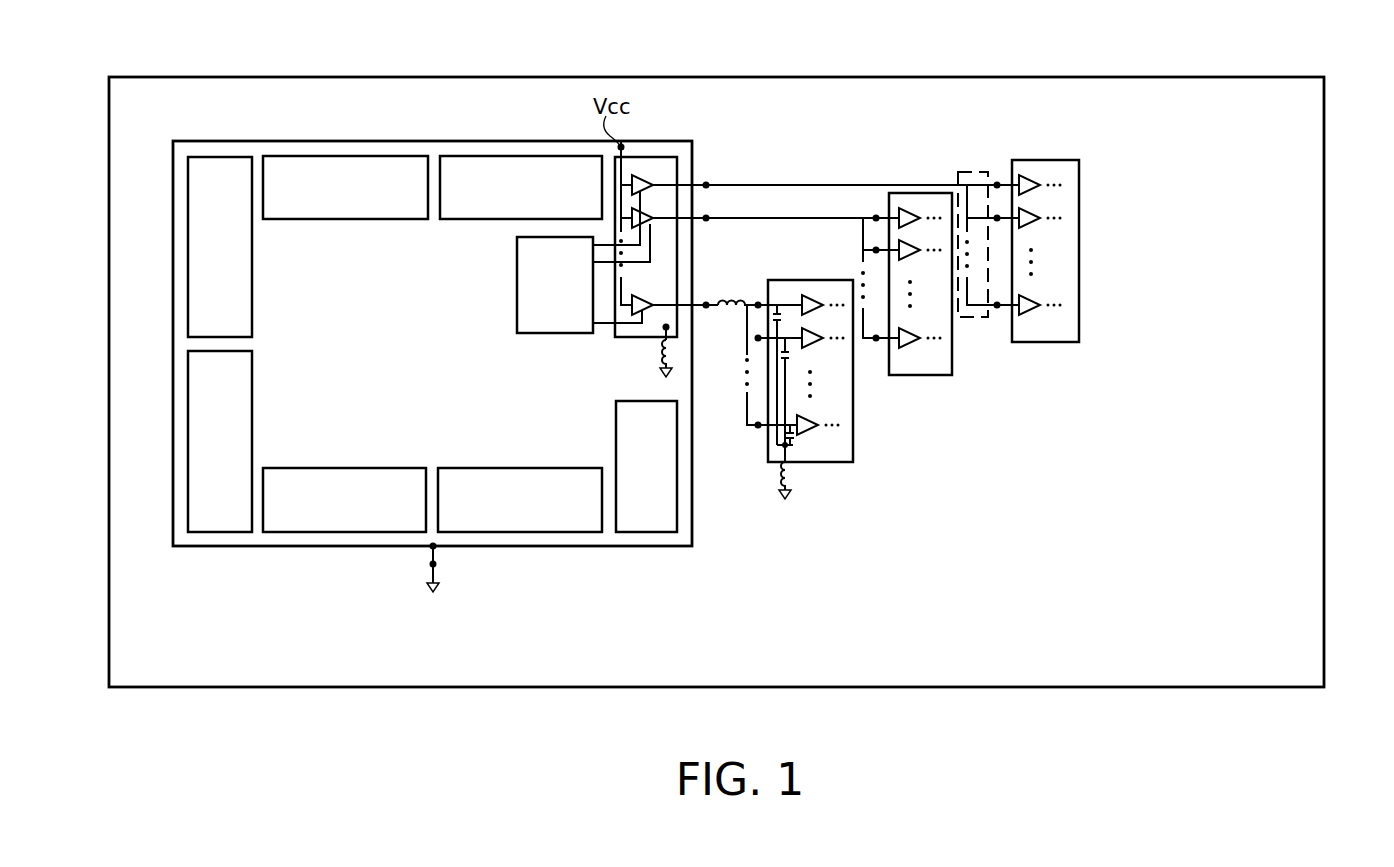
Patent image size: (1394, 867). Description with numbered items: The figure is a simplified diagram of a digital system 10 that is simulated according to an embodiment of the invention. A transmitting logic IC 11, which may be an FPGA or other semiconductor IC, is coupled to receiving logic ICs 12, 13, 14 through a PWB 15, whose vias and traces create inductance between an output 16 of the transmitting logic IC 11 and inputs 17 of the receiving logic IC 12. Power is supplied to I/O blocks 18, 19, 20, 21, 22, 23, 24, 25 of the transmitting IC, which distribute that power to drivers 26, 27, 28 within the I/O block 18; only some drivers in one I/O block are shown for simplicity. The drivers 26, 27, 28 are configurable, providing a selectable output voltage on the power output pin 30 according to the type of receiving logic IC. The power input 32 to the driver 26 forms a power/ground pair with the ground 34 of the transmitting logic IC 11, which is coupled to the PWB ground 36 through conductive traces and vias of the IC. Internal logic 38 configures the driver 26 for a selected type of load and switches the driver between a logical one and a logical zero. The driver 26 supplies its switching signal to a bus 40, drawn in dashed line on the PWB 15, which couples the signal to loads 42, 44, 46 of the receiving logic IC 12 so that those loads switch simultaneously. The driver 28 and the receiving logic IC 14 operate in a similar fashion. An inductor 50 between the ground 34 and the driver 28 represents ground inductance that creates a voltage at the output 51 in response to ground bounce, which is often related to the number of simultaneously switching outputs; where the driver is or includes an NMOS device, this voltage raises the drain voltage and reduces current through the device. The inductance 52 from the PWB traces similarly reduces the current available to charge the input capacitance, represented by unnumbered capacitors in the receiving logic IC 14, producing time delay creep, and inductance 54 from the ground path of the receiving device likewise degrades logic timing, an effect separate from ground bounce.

The digital system 10 is at (1232, 64).
The transmitting logic IC 11 is at (564, 140).
The receiving logic IC 12 is at (1041, 161).
The receiving logic IC 13 is at (920, 375).
The receiving logic IC 14 is at (841, 462).
The PWB 15 is at (1312, 517).
The output 16 is at (700, 182).
The inputs 17 is at (998, 181).
The I/O block 18 is at (650, 163).
The I/O block 19 is at (668, 521).
The I/O block 20 is at (575, 520).
The I/O block 21 is at (295, 520).
The I/O block 22 is at (218, 520).
The I/O block 23 is at (200, 297).
The I/O block 24 is at (347, 168).
The I/O block 25 is at (521, 168).
The driver 26 is at (642, 176).
The driver 27 is at (652, 226).
The driver 28 is at (654, 290).
The power output pin 30 is at (708, 188).
The power input 32 is at (634, 170).
The ground 34 is at (670, 327).
The PWB ground 36 is at (440, 590).
The internal logic 38 is at (557, 335).
The bus 40 is at (969, 170).
The load 42 is at (1035, 182).
The load 44 is at (1035, 215).
The load 46 is at (1035, 301).
The inductor 50 is at (658, 354).
The output 51 is at (706, 300).
The inductance 52 is at (729, 299).
The inductance 54 is at (778, 483).